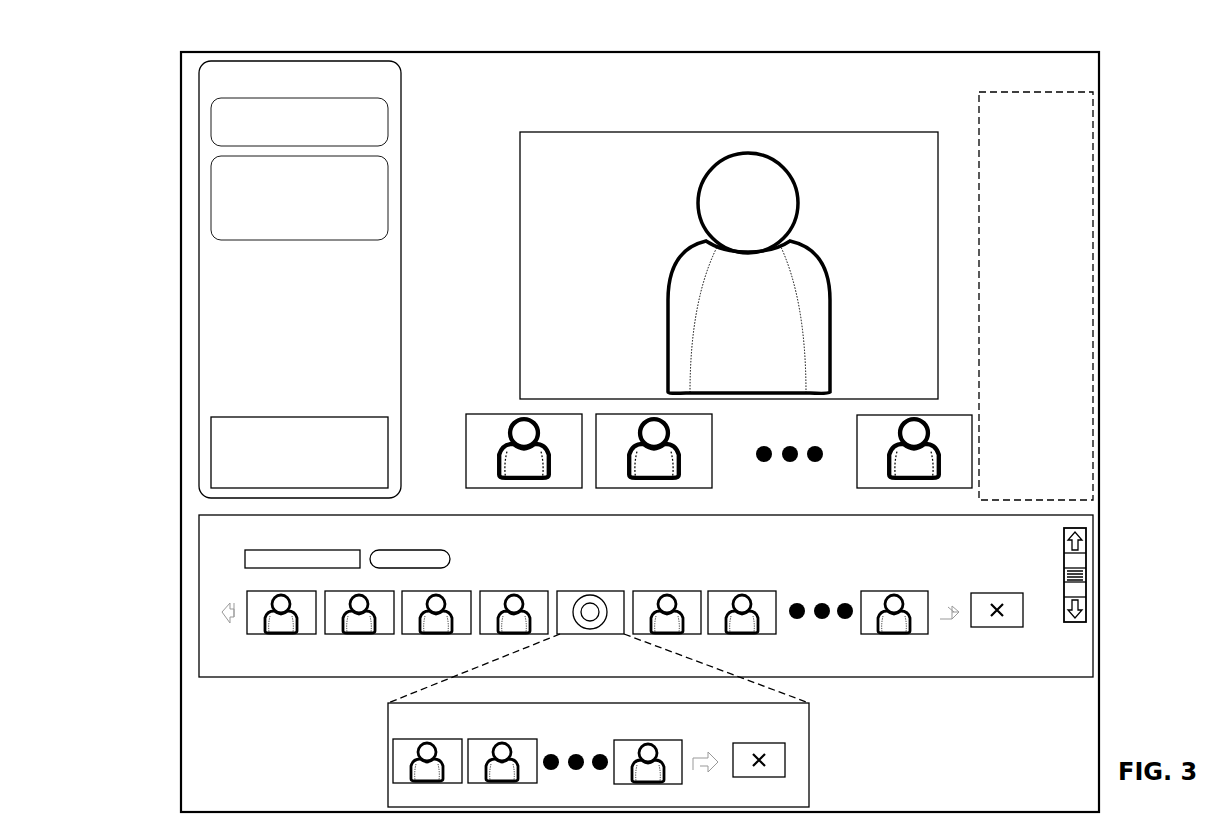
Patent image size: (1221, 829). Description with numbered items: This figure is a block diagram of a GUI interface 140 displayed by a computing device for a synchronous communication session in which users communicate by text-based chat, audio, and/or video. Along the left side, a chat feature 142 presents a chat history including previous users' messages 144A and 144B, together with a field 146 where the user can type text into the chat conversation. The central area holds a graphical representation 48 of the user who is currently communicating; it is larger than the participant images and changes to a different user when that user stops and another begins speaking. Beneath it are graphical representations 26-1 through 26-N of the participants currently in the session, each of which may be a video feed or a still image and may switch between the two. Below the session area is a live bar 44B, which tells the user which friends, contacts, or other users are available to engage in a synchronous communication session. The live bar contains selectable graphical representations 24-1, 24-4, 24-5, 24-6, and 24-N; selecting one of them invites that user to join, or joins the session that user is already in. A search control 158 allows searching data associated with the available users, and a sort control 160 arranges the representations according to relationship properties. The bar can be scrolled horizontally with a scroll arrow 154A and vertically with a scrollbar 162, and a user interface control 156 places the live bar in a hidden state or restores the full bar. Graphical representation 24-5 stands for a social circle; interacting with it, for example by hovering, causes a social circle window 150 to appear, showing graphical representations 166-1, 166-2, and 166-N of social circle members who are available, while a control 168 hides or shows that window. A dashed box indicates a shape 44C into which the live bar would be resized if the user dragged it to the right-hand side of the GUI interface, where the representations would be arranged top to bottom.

The GUI interface 140 is at (181, 258).
The chat feature 142 is at (335, 74).
The message 144A is at (400, 120).
The message 144B is at (400, 190).
The field 146 is at (290, 417).
The graphical representation 48 is at (682, 138).
The shape 44C is at (976, 101).
The graphical representation 26-1 is at (462, 437).
The graphical representation 26-N is at (853, 438).
The live bar 44B is at (646, 612).
The search control 158 is at (308, 546).
The sort control 160 is at (415, 546).
The scroll arrow 154A is at (219, 630).
The graphical representation 24-1 is at (272, 591).
The graphical representation 24-4 is at (520, 591).
The graphical representation 24-5 is at (580, 591).
The graphical representation 24-6 is at (672, 591).
The graphical representation 24-N is at (900, 591).
The user interface control 156 is at (1010, 636).
The scrollbar 162 is at (1080, 628).
The social circle window 150 is at (560, 747).
The graphical representation 166-1 is at (456, 739).
The graphical representation 166-2 is at (525, 739).
The graphical representation 166-N is at (630, 739).
The control 168 is at (765, 743).